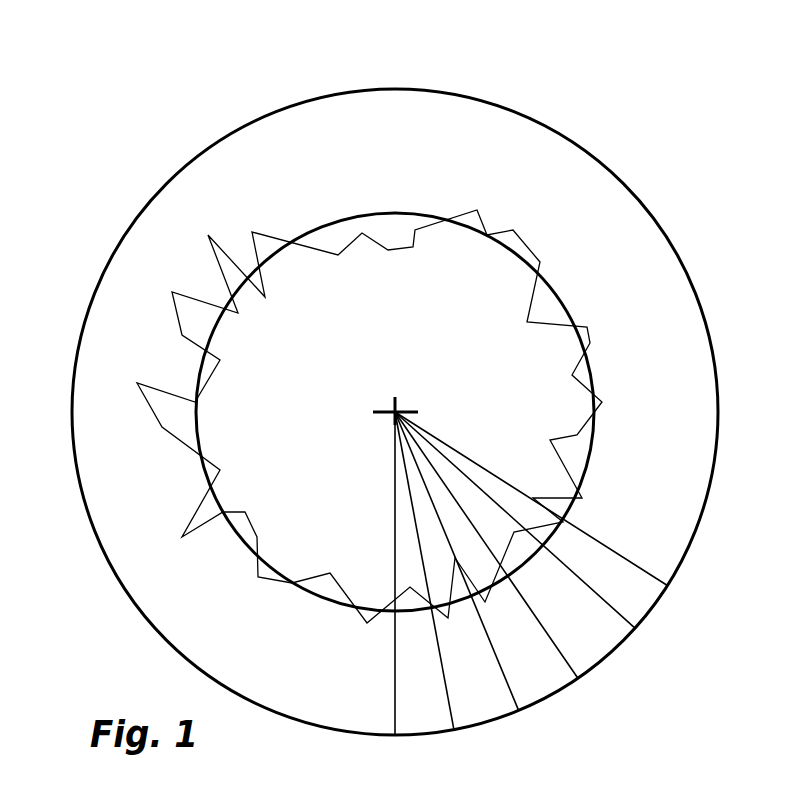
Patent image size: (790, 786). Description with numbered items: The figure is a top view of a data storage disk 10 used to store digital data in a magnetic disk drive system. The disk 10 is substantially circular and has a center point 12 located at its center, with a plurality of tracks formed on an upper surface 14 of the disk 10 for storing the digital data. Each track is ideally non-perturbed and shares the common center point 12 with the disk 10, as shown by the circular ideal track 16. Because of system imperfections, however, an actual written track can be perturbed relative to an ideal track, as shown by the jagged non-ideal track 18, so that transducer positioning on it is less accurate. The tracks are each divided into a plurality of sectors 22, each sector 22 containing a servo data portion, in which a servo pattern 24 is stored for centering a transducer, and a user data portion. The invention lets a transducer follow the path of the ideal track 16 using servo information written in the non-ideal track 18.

The data storage disk 10 is at (84, 156).
The center point 12 is at (398, 418).
The upper surface 14 is at (316, 174).
The ideal track 16 is at (587, 456).
The non-ideal track 18 is at (453, 223).
The sectors 22 is at (404, 687).
The servo pattern 24 is at (467, 785).